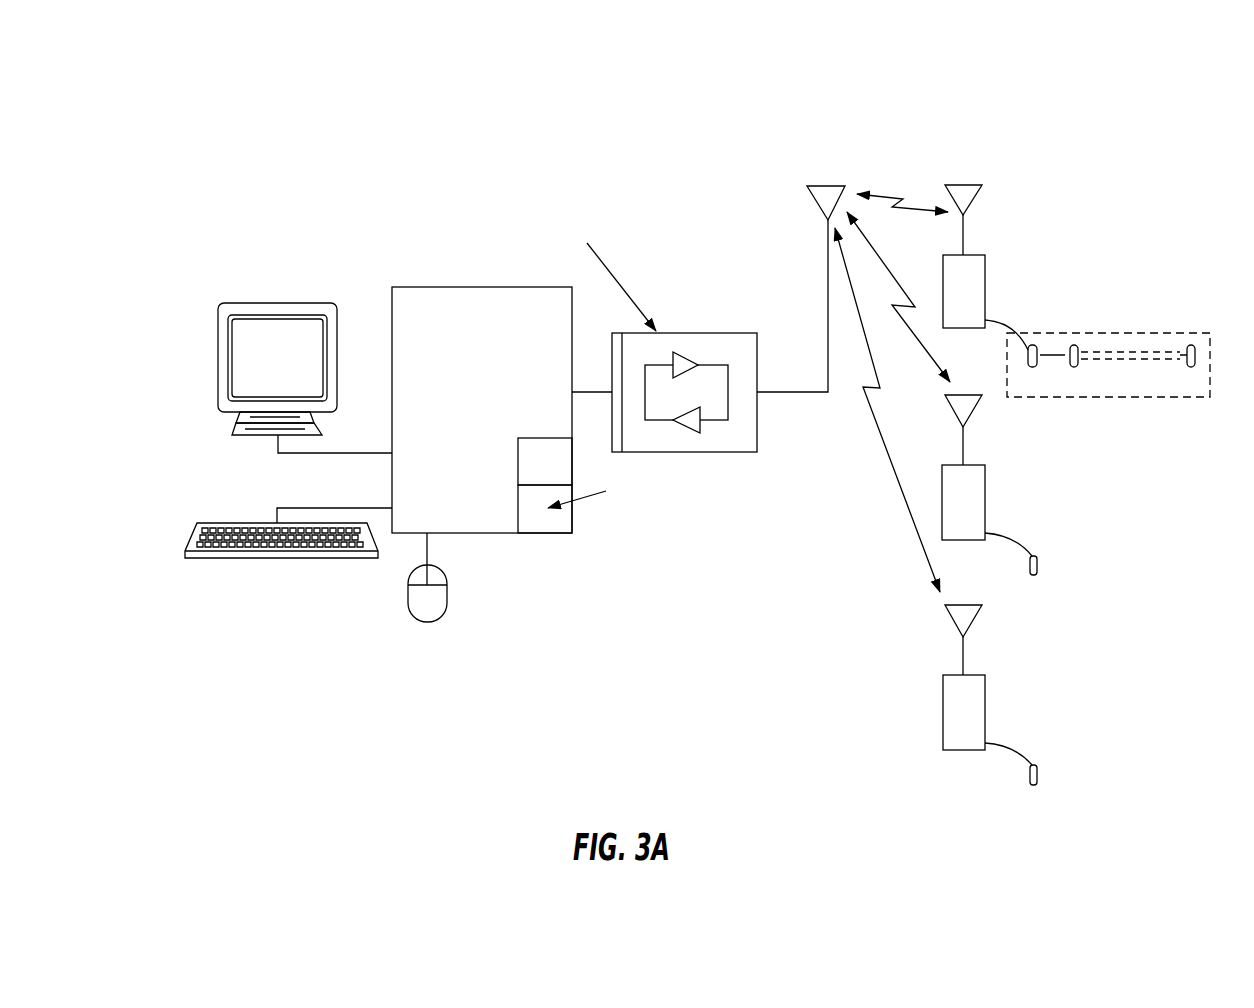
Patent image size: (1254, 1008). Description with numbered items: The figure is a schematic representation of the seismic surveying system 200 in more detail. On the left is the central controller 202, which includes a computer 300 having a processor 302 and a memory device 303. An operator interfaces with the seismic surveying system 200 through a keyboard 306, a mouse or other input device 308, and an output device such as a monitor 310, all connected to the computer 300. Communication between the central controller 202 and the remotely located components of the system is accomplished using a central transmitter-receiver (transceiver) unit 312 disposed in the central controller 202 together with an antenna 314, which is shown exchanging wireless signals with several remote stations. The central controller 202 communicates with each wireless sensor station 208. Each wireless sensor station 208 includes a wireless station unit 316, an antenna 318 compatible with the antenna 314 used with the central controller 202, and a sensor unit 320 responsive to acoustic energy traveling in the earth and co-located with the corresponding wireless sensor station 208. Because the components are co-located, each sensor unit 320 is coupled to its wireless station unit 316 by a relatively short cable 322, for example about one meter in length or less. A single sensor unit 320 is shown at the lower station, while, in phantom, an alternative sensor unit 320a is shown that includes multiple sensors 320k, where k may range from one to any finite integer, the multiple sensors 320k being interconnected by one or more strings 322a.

The seismic surveying system 200 is at (267, 105).
The central controller 202 is at (278, 634).
The wireless sensor station 208 is at (972, 255).
The computer 300 is at (403, 278).
The processor 302 is at (518, 498).
The memory device 303 is at (537, 438).
The keyboard 306 is at (198, 522).
The mouse 308 is at (447, 600).
The monitor 310 is at (222, 303).
The central transmitter-receiver unit 312 is at (717, 333).
The antenna 314 is at (832, 184).
The wireless station unit 316 is at (933, 782).
The antenna 318 is at (973, 623).
The sensor unit 320 is at (1038, 772).
The sensor unit 320a is at (1040, 397).
The sensor 320k is at (1076, 344).
The cable 322 is at (1030, 344).
The string 322a is at (1100, 362).